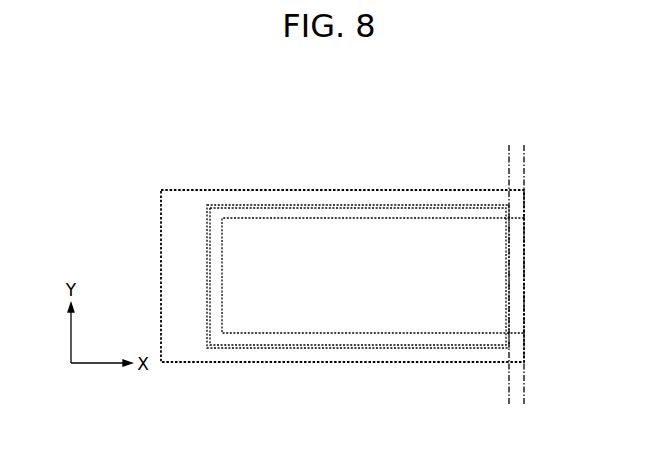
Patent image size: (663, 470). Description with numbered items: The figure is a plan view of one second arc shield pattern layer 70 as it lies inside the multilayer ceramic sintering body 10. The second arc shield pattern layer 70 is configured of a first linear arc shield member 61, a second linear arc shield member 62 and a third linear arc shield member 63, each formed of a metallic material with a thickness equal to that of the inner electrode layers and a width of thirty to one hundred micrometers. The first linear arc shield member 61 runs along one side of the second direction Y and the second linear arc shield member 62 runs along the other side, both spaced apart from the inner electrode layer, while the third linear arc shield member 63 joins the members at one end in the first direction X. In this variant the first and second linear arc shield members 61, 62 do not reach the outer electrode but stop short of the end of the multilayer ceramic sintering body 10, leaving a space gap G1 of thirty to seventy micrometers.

The multilayer ceramic sintering body 10 is at (177, 247).
The second arc shield pattern layer 70 is at (306, 143).
The first linear arc shield member 61 is at (260, 208).
The second linear arc shield member 62 is at (295, 345).
The third linear arc shield member 63 is at (203, 238).
The space gap G1 is at (549, 162).